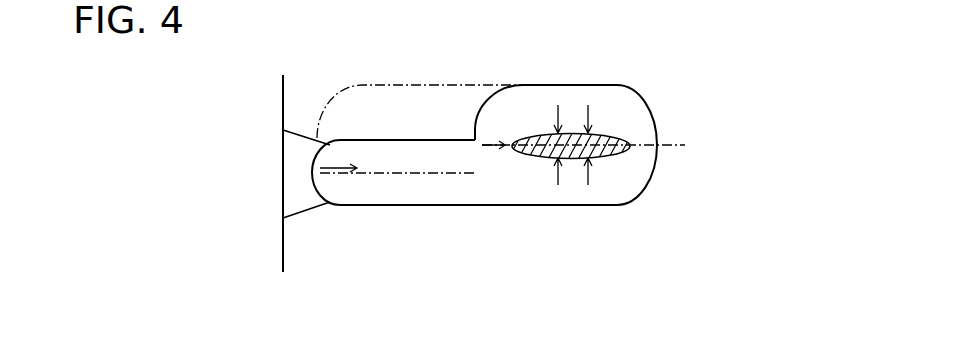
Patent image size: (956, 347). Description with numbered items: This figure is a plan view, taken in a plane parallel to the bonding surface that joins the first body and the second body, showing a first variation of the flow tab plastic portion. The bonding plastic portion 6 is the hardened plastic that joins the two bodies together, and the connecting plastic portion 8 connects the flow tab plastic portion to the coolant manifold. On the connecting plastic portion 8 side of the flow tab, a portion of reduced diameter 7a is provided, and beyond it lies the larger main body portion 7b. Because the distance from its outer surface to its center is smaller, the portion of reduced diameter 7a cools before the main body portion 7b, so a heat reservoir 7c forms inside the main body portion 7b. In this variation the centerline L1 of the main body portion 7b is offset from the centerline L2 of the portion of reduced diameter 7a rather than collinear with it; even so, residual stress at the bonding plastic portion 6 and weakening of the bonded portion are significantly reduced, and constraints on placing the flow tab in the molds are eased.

The bonding plastic portion 6 is at (274, 138).
The connecting plastic portion 8 is at (303, 193).
The portion of reduced diameter 7a is at (443, 195).
The main body portion 7b is at (595, 85).
The heat reservoir 7c is at (612, 134).
The centerline of the main body portion L1 is at (606, 145).
The centerline of the portion of reduced diameter L2 is at (420, 174).